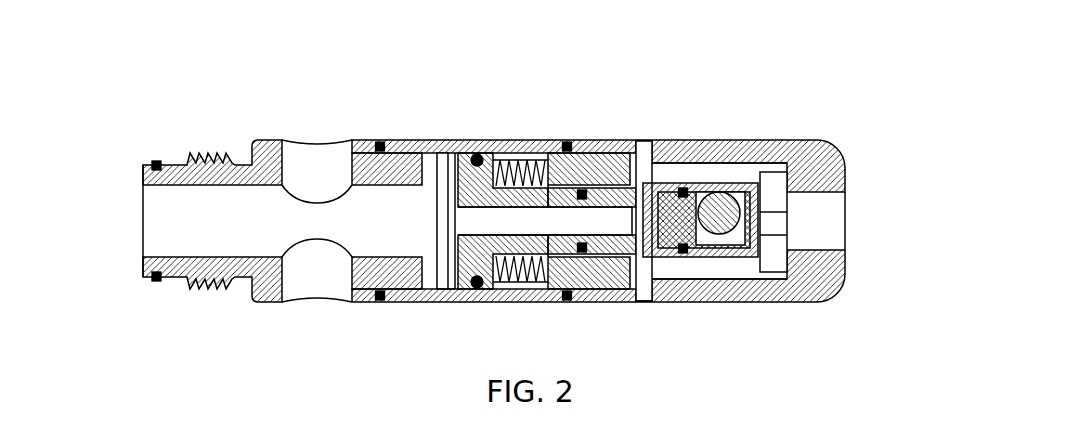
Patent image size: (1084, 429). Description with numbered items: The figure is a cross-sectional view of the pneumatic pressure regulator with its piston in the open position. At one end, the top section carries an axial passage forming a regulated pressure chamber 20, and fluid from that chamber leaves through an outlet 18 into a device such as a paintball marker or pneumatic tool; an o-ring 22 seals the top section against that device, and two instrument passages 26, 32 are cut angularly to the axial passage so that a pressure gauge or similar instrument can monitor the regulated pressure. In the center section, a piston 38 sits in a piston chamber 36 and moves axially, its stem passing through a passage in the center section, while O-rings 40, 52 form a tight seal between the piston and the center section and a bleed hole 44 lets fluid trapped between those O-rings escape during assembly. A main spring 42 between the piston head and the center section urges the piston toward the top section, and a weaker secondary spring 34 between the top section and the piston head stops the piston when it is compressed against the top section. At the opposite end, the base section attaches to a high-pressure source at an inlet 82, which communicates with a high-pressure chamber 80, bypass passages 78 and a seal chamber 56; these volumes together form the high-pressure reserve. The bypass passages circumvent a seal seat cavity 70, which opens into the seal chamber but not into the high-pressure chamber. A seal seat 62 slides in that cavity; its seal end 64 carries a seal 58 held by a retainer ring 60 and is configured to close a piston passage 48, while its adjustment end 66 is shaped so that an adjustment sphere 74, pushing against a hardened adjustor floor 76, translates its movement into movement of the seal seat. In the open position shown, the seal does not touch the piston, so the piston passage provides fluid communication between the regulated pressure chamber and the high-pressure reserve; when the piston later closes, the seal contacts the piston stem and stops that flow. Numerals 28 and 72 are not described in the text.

The outlet 18 is at (141, 228).
The regulated pressure chamber 20 is at (170, 223).
The o-ring 22 is at (153, 163).
The instrument passage 26 is at (305, 268).
The housing O-ring seal 28 is at (378, 146).
The instrument passage 32 is at (327, 168).
The secondary spring 34 is at (440, 165).
The piston chamber 36 is at (452, 170).
The piston 38 is at (451, 292).
The O-ring 40 is at (477, 158).
The main spring 42 is at (515, 170).
The bleed hole 44 is at (535, 292).
The piston passage 48 is at (533, 220).
The O-ring 52 is at (592, 298).
The seal chamber 56 is at (642, 162).
The retainer ring 60 is at (645, 292).
The seal 58 is at (663, 190).
The seal seat 62 is at (684, 250).
The seal end 64 is at (673, 190).
The adjustment end 66 is at (712, 245).
The seal seat cavity 70 is at (743, 173).
The seat lower passage 72 is at (745, 262).
The adjustment sphere 74 is at (765, 247).
The adjustor floor 76 is at (843, 272).
The bypass passages 78 is at (768, 193).
The high-pressure chamber 80 is at (842, 158).
The inlet 82 is at (812, 218).